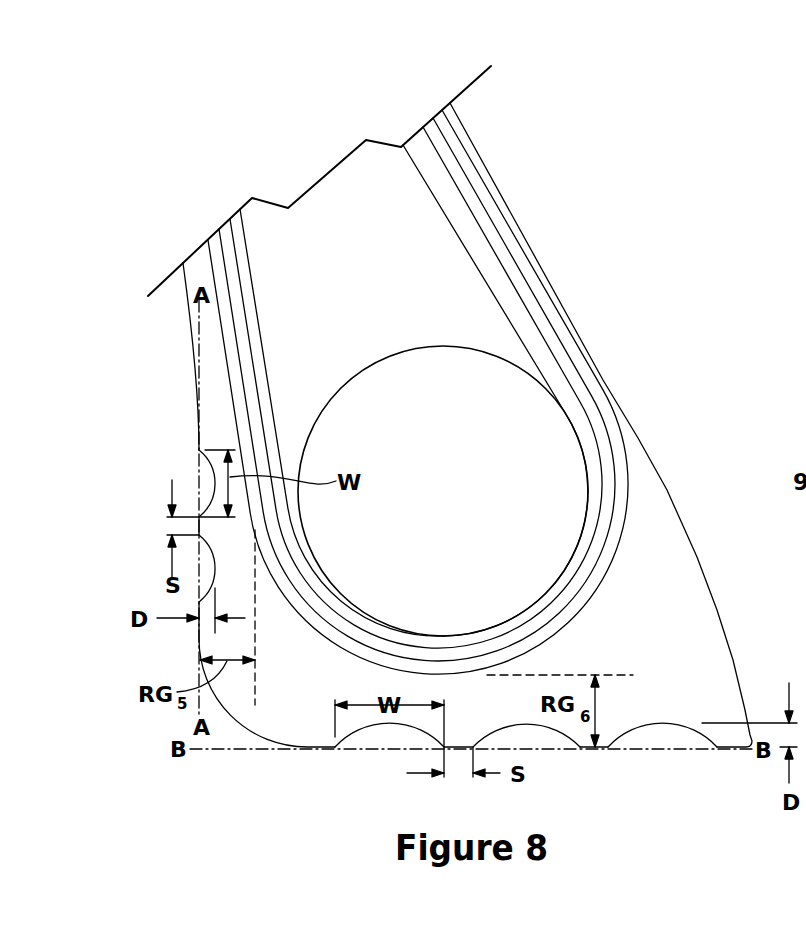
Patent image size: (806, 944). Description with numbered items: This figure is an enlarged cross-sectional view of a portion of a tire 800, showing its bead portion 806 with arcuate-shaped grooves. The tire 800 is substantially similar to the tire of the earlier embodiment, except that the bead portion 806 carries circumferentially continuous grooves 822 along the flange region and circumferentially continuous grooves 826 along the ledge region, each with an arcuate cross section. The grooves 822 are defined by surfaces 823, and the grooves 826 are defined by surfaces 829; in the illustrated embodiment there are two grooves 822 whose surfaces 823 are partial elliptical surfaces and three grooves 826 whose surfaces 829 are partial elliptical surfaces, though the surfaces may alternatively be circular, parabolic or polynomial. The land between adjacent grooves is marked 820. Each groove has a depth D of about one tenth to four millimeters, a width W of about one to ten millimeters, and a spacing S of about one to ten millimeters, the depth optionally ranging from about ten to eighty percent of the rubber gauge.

The tire 800 is at (553, 193).
The bead portion 806 is at (581, 246).
The land between scallops 820 is at (595, 761).
The circumferentially continuous grooves 822 is at (205, 480).
The surfaces 823 is at (207, 450).
The circumferentially continuous grooves 826 is at (387, 740).
The surfaces 829 is at (665, 726).